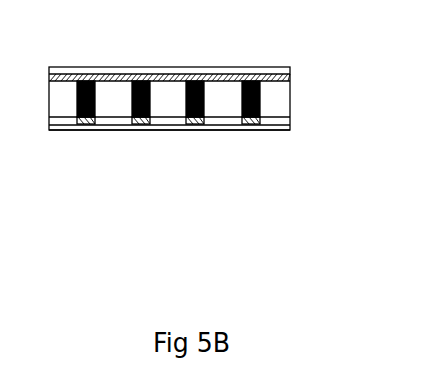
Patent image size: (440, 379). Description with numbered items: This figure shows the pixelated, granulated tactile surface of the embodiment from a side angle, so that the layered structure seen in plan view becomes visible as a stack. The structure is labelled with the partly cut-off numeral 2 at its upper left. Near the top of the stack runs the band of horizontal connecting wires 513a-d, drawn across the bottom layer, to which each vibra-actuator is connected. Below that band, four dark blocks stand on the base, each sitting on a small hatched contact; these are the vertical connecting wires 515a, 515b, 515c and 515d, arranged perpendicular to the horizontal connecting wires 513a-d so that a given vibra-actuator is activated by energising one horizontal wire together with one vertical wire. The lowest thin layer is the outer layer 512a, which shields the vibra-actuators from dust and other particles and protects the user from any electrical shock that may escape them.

The array / substrate assembly 2 is at (90, 72).
The horizontal connecting wires 513a-d is at (290, 78).
The outer layer 512a is at (290, 127).
The vertical connecting wire 515a is at (87, 125).
The vertical connecting wire 515b is at (139, 125).
The vertical connecting wire 515c is at (195, 125).
The vertical connecting wire 515d is at (250, 125).